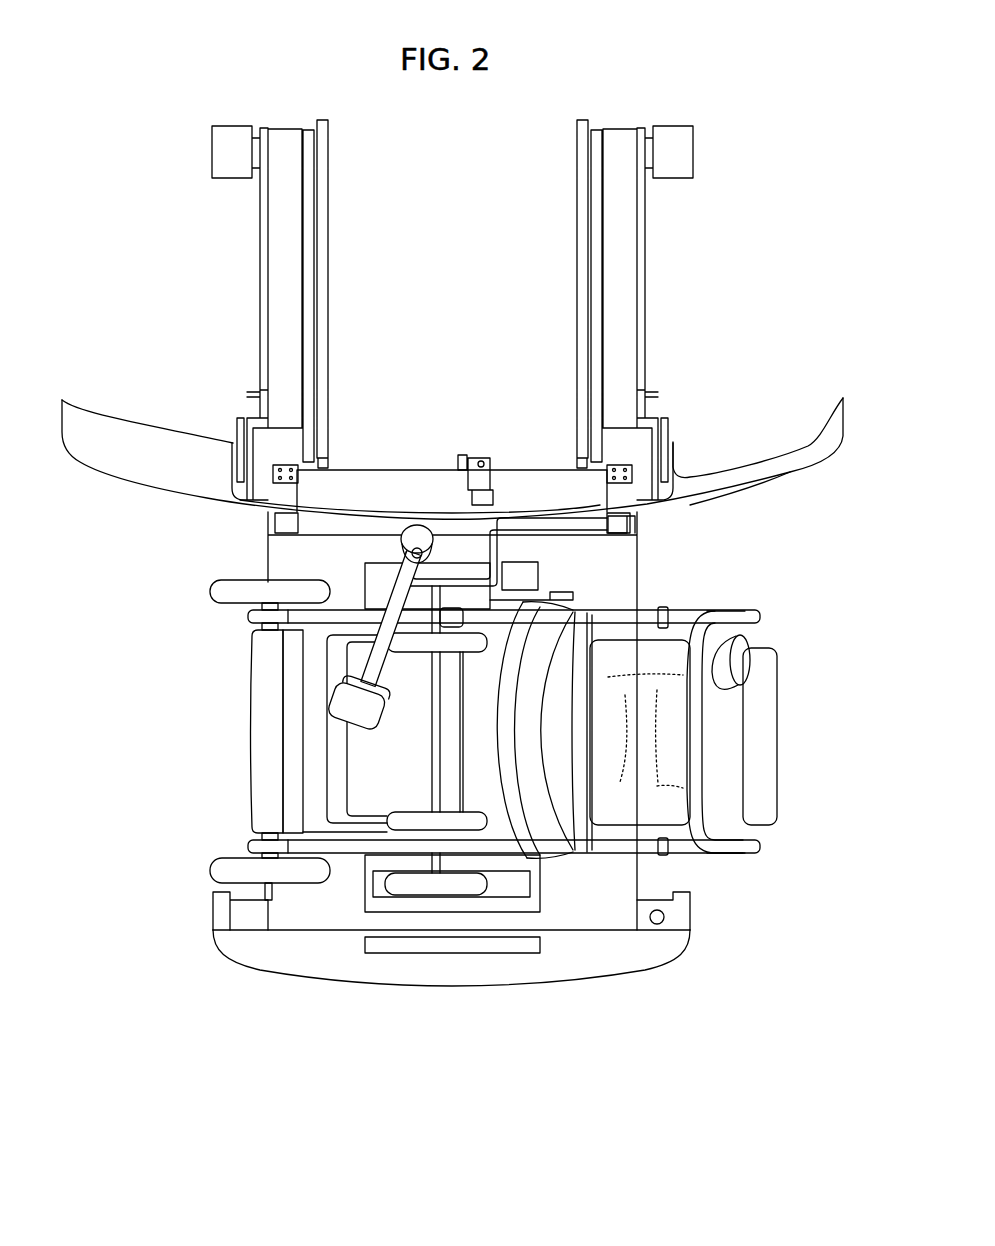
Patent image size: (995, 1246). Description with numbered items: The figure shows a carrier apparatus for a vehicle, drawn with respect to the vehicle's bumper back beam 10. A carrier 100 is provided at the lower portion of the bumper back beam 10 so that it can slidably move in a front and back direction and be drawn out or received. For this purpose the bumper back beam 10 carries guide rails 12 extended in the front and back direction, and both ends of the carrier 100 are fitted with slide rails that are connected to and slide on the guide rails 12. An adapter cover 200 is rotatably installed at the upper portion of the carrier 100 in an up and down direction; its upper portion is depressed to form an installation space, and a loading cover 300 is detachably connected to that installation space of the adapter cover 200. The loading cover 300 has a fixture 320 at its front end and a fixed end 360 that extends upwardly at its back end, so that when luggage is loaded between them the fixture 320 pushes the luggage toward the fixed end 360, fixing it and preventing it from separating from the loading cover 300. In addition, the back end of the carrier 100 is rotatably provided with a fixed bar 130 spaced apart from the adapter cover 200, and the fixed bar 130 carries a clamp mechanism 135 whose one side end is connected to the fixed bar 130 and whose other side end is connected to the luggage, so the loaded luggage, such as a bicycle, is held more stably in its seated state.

The bumper back beam 10 is at (715, 485).
The guide rails 12 is at (620, 280).
The carrier 100 is at (215, 952).
The fixed bar 130 is at (502, 552).
The clamp mechanism 135 is at (370, 670).
The adapter cover 200 is at (620, 588).
The loading cover 300 is at (356, 902).
The fixture 320 is at (507, 885).
The fixed end 360 is at (377, 578).